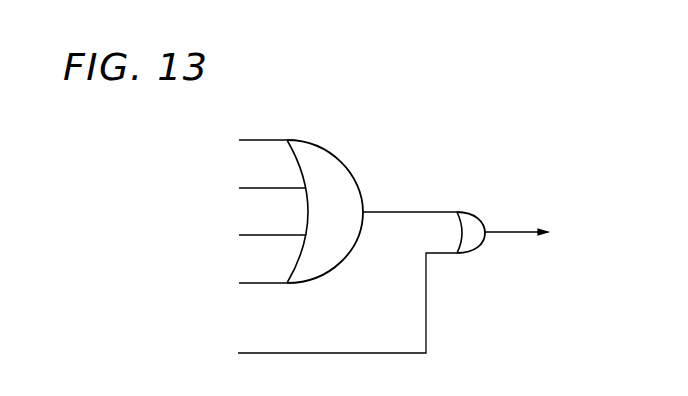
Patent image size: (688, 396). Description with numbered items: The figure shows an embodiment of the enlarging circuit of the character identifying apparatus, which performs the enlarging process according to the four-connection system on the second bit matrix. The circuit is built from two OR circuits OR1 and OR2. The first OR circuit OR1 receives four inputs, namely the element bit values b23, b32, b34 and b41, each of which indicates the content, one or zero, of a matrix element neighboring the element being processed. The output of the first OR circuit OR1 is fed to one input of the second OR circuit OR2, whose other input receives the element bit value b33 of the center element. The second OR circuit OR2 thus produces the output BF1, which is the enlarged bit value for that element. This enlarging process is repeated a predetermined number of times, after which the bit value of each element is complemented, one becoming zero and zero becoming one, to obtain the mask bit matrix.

The OR circuit OR1 is at (362, 125).
The OR circuit OR2 is at (478, 196).
The element bit value b23 is at (241, 142).
The element bit value b32 is at (251, 190).
The element bit value b34 is at (251, 237).
The element bit value b41 is at (241, 285).
The element bit value b33 is at (326, 311).
The enlarged bit output BF1 is at (534, 234).